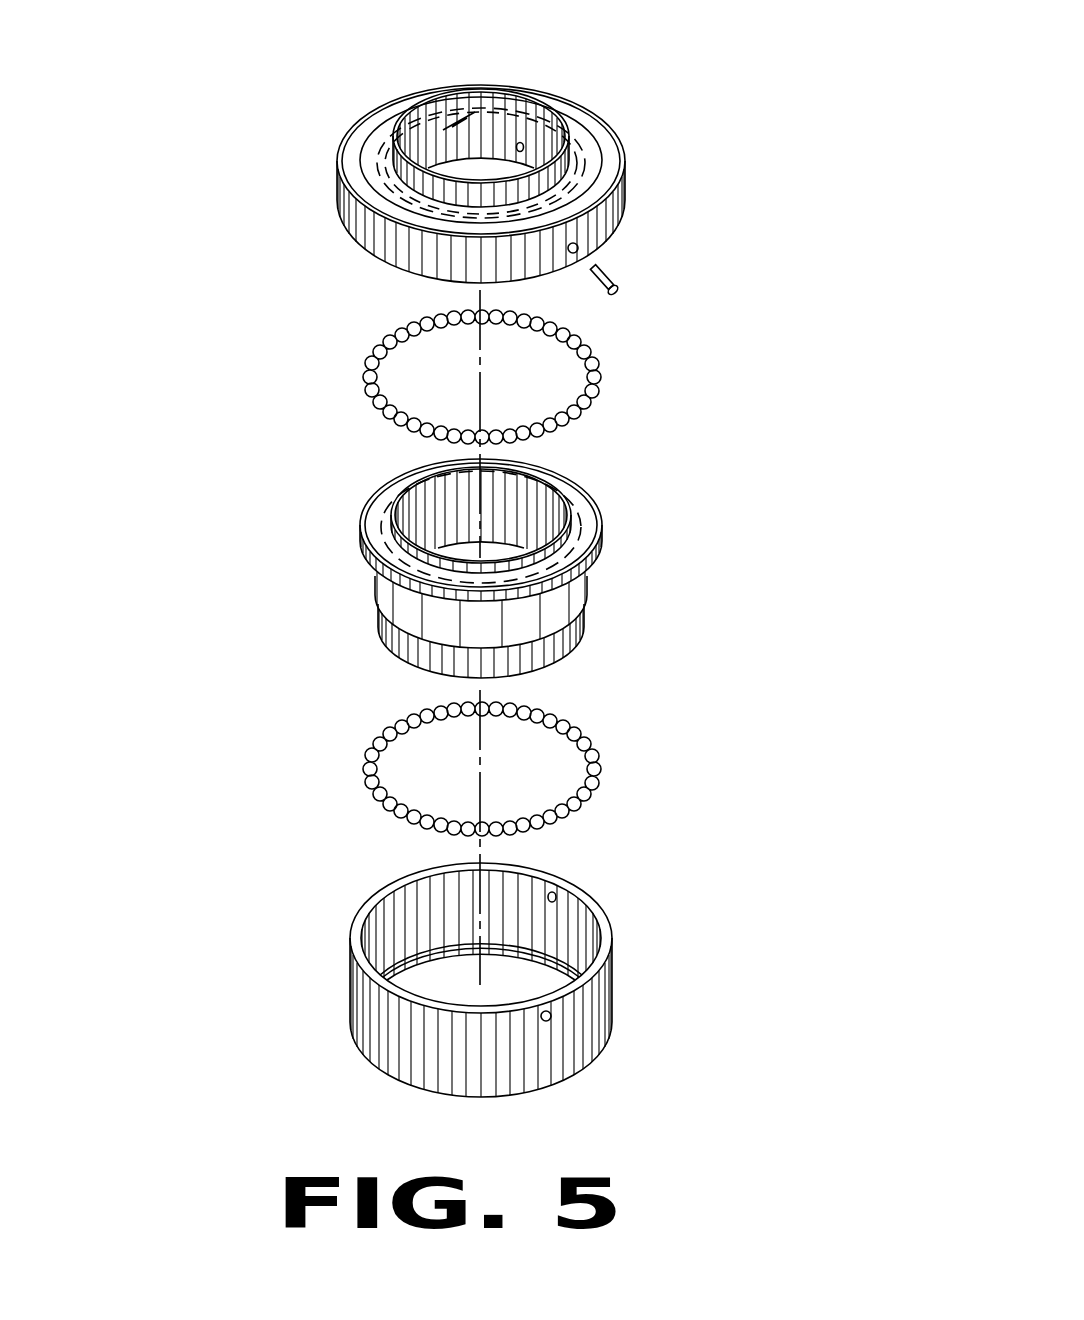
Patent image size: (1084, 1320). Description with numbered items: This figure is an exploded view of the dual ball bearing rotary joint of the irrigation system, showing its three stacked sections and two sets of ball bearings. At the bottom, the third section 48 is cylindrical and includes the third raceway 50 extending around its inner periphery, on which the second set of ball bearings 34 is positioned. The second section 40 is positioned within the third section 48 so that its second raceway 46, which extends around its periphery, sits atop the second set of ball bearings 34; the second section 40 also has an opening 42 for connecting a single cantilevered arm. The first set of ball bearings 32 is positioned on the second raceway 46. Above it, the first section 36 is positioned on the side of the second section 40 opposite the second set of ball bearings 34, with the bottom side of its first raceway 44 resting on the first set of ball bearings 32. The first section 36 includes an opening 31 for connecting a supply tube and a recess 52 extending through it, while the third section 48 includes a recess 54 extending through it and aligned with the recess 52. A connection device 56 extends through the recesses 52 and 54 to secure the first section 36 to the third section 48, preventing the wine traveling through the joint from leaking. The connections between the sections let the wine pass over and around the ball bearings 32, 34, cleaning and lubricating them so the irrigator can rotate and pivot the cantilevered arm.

The opening 31 is at (505, 107).
The first set of ball bearings 32 is at (593, 360).
The second set of ball bearings 34 is at (598, 782).
The first section 36 is at (618, 140).
The second section 40 is at (600, 537).
The opening 42 is at (567, 652).
The first raceway 44 is at (583, 133).
The second raceway 46 is at (587, 520).
The third section 48 is at (613, 977).
The third raceway 50 is at (540, 952).
The recess 52 is at (568, 246).
The recess 54 is at (548, 1018).
The connection device 56 is at (606, 278).